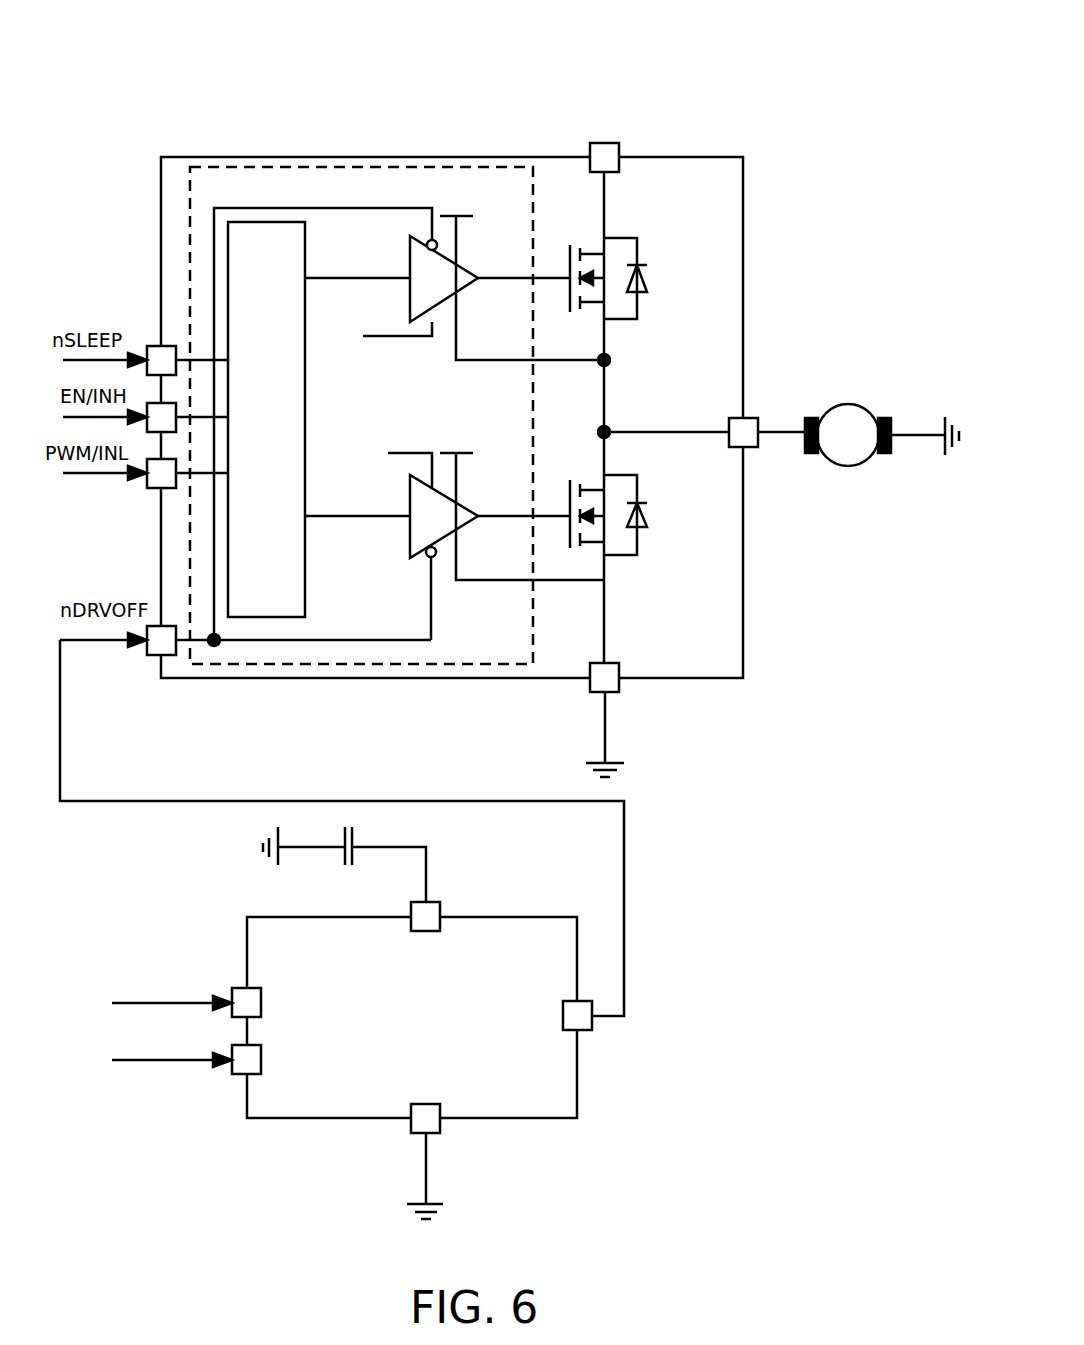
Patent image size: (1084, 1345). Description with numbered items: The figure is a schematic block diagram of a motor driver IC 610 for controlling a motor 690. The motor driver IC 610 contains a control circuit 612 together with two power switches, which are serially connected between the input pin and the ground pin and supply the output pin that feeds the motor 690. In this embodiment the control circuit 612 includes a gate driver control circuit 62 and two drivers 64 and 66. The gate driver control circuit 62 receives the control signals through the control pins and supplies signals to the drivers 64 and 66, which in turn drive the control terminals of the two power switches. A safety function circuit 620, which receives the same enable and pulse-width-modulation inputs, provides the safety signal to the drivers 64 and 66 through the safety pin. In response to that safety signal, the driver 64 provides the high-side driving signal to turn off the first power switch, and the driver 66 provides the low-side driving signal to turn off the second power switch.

The motor driver IC 610 is at (457, 156).
The control circuit 612 is at (242, 167).
The gate driver control circuit 62 is at (307, 595).
The driver 64 is at (454, 288).
The driver 66 is at (454, 546).
The motor 690 is at (848, 404).
The safety function circuit 620 is at (490, 917).